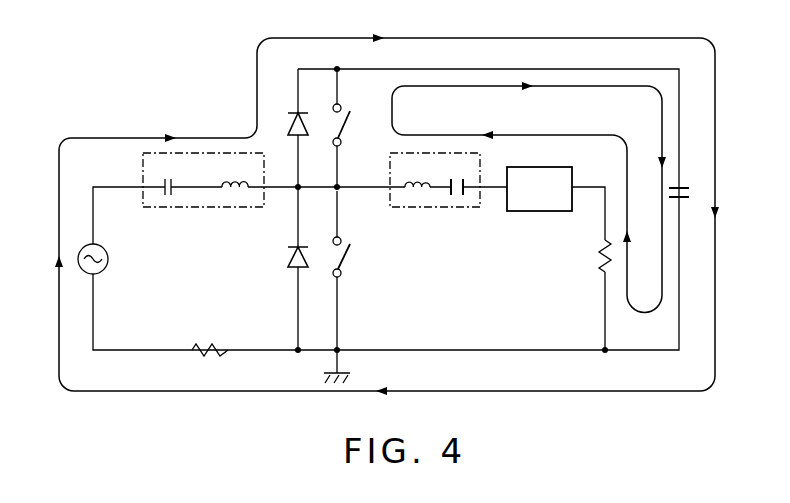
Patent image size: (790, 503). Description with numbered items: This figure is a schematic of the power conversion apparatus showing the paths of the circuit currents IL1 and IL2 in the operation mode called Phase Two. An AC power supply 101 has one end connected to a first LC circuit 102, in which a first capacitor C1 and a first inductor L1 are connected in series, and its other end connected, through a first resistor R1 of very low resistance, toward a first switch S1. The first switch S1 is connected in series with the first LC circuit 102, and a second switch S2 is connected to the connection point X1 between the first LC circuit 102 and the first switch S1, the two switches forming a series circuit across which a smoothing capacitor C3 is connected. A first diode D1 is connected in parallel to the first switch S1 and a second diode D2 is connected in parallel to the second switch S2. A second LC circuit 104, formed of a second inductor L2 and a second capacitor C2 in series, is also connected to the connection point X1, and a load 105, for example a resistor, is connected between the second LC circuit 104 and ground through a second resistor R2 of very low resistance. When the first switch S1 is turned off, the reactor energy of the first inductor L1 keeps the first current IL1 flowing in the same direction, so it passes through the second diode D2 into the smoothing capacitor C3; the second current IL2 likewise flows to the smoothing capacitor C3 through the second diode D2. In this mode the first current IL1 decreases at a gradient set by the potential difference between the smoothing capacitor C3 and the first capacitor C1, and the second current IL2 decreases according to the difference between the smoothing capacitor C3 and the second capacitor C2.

The AC power supply 101 is at (104, 248).
The first LC circuit 102 is at (203, 198).
The second LC circuit 104 is at (435, 199).
The load 105 is at (540, 211).
The first capacitor C1 is at (167, 176).
The first inductor L1 is at (235, 172).
The second inductor L2 is at (417, 172).
The second capacitor C2 is at (457, 176).
The smoothing capacitor C3 is at (686, 183).
The first resistor R1 is at (210, 338).
The second resistor R2 is at (594, 256).
The first diode D1 is at (286, 258).
The second diode D2 is at (287, 124).
The first switch S1 is at (350, 250).
The second switch S2 is at (350, 118).
The connection point X1 is at (338, 186).
The first current IL1 is at (118, 137).
The second current IL2 is at (570, 135).